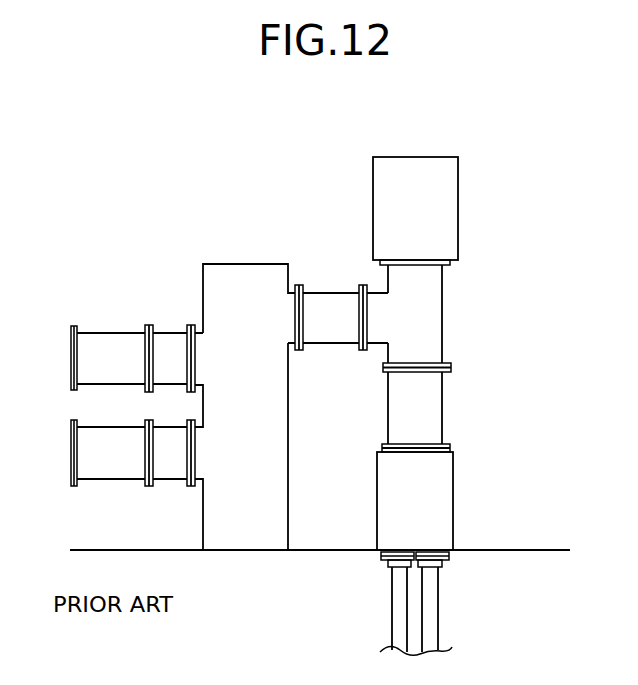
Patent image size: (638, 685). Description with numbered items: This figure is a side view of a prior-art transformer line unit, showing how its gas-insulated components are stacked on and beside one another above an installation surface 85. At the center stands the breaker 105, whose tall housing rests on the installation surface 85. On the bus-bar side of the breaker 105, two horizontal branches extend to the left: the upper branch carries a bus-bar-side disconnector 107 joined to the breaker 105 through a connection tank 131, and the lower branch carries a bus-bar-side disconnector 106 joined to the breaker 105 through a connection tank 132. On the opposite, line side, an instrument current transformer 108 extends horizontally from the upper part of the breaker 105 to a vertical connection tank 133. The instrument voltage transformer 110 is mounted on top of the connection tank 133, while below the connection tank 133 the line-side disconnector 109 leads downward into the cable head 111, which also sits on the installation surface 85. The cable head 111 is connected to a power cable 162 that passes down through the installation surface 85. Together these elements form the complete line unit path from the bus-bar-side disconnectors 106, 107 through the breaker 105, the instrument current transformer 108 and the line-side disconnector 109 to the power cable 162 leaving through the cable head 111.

The installation surface 85 is at (552, 550).
The breaker 105 is at (289, 447).
The bus-bar-side disconnector 106 is at (98, 427).
The bus-bar-side disconnector 107 is at (113, 333).
The instrument current transformer 108 is at (332, 293).
The line-side disconnector 109 is at (444, 405).
The instrument voltage transformer 110 is at (422, 157).
The cable head 111 is at (454, 500).
The connection tank 131 is at (173, 333).
The connection tank 132 is at (168, 427).
The connection tank 133 is at (444, 310).
The power cable 162 is at (430, 613).